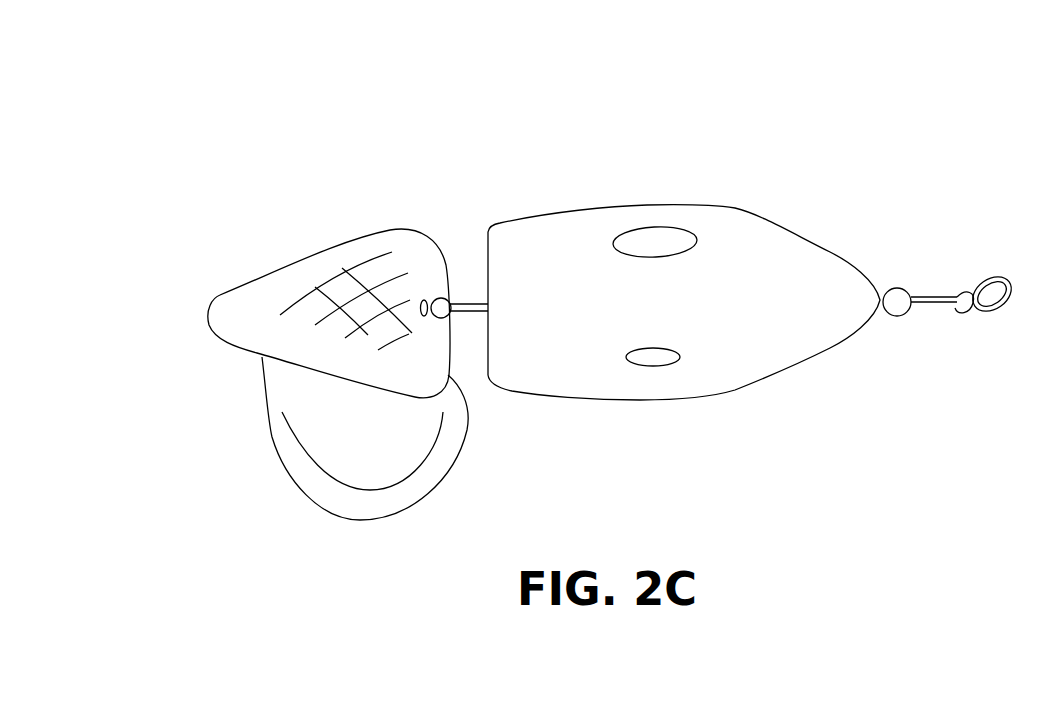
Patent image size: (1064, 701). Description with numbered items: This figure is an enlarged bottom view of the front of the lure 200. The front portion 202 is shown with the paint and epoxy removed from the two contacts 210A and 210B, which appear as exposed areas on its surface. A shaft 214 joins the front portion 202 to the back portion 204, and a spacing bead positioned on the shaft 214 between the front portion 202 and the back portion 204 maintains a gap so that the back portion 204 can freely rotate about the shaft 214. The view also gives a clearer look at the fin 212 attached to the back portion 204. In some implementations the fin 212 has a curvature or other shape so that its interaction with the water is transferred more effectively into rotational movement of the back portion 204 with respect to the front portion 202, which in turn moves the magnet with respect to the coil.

The lure 200 is at (713, 136).
The front portion 202 is at (900, 337).
The back portion 204 is at (235, 258).
The contact 210A is at (650, 235).
The contact 210B is at (652, 358).
The fin 212 is at (270, 433).
The shaft 214 is at (458, 298).